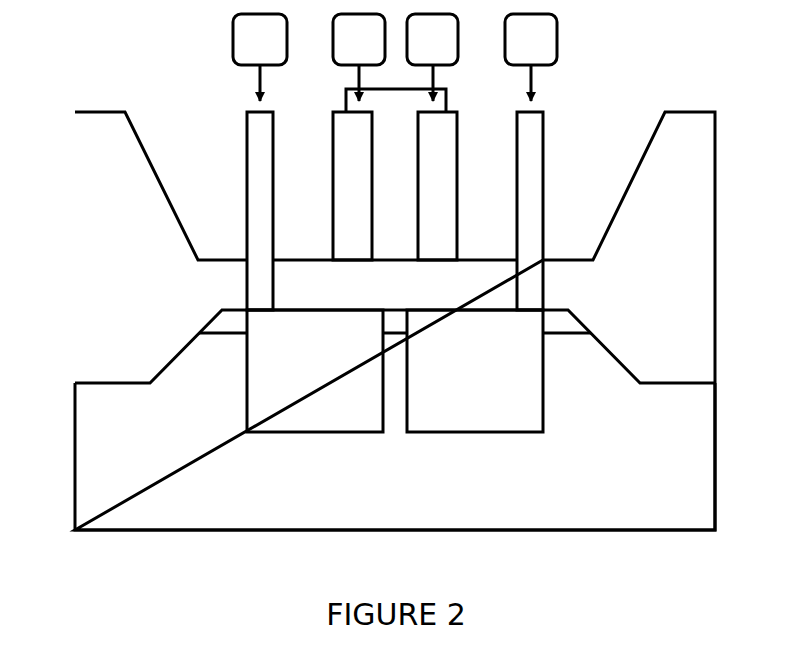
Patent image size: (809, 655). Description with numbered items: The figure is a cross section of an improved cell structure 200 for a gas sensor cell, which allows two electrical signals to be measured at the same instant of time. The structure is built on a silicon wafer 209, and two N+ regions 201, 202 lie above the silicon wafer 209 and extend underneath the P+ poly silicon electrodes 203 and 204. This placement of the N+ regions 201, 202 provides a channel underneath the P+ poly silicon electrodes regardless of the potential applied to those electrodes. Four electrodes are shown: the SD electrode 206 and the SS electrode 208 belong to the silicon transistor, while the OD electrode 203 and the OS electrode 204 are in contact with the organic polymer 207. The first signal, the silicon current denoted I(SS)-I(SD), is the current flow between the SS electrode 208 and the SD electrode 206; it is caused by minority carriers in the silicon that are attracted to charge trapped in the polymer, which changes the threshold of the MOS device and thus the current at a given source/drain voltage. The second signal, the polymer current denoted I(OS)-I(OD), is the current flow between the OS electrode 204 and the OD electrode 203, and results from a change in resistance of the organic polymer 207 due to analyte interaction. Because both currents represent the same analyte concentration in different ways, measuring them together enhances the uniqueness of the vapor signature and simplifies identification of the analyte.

The improved cell structure 200 is at (165, 83).
The N+ region 201 is at (247, 383).
The N+ region 202 is at (543, 383).
The OD electrode 203 is at (332, 160).
The OS electrode 204 is at (459, 160).
The SD electrode 206 is at (248, 160).
The organic polymer 207 is at (417, 173).
The SS electrode 208 is at (544, 160).
The silicon wafer 209 is at (625, 493).